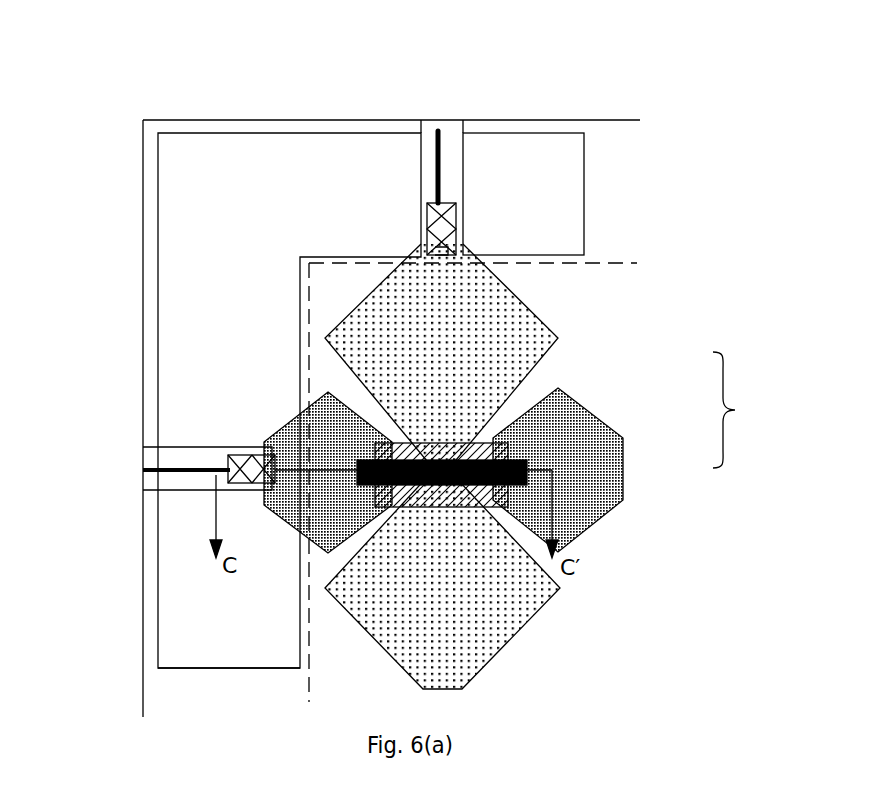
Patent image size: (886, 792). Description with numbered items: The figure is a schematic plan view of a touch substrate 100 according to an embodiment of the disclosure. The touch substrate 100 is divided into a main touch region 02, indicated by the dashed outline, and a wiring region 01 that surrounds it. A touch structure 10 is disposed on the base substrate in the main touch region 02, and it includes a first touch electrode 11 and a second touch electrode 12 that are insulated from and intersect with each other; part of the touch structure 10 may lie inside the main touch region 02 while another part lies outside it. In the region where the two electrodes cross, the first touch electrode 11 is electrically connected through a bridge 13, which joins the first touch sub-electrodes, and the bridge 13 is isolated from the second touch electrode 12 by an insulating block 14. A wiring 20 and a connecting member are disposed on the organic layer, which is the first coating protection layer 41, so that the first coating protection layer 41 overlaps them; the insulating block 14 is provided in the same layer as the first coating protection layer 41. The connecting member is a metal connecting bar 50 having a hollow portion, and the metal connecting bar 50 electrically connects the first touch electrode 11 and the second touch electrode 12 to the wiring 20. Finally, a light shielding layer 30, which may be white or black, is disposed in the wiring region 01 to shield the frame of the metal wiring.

The touch substrate 100 is at (128, 87).
The wiring region 01 is at (252, 388).
The main touch region 02 is at (327, 310).
The light shielding layer 30 is at (207, 658).
The touch structure 10 is at (742, 410).
The first touch electrode 11 is at (592, 458).
The second touch electrode 12 is at (535, 337).
The bridge 13 is at (523, 482).
The insulating block 14 is at (495, 503).
The wiring 20 is at (172, 473).
The first coating protection layer 41 is at (228, 478).
The metal connecting bar 50 is at (217, 489).